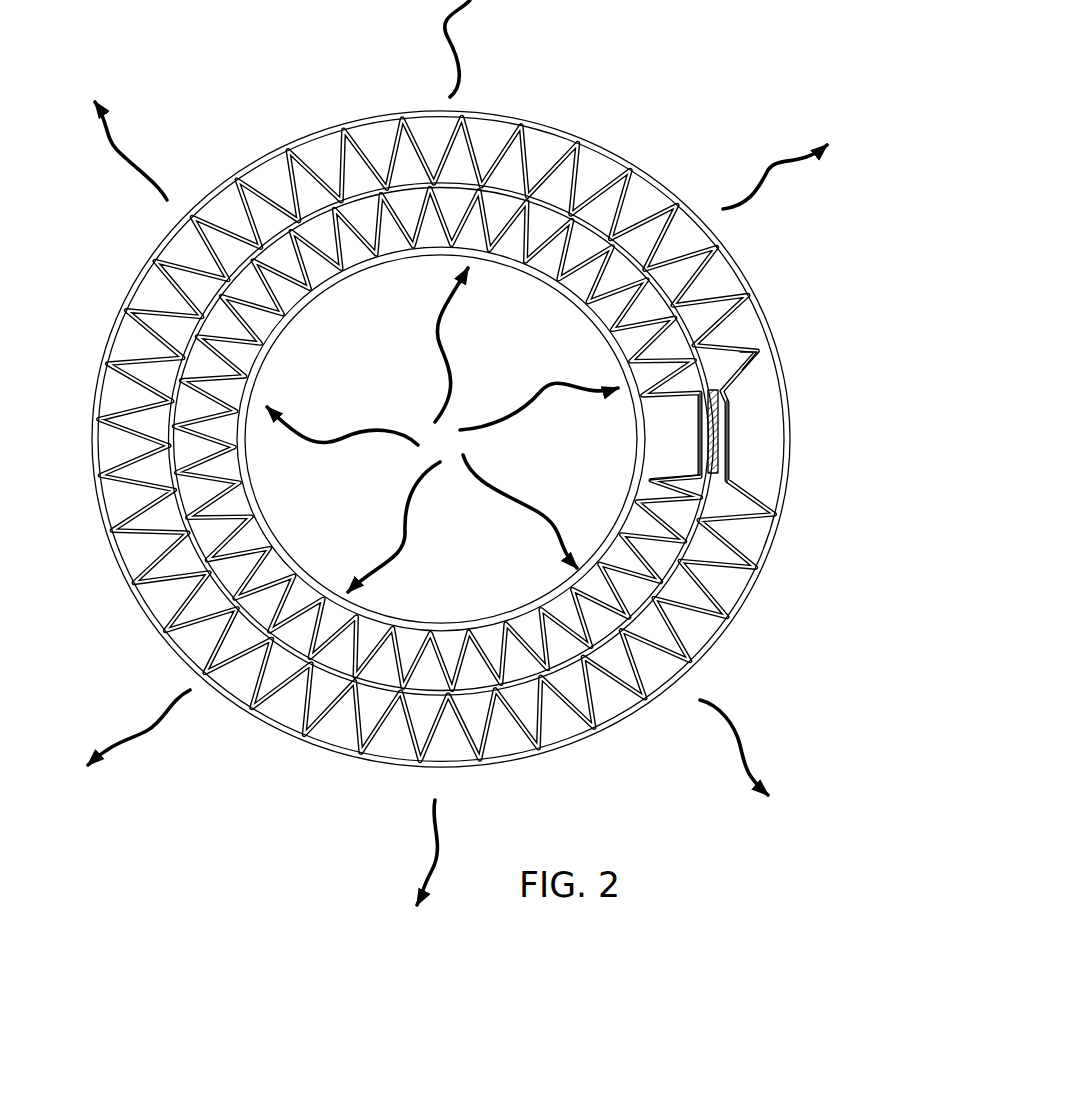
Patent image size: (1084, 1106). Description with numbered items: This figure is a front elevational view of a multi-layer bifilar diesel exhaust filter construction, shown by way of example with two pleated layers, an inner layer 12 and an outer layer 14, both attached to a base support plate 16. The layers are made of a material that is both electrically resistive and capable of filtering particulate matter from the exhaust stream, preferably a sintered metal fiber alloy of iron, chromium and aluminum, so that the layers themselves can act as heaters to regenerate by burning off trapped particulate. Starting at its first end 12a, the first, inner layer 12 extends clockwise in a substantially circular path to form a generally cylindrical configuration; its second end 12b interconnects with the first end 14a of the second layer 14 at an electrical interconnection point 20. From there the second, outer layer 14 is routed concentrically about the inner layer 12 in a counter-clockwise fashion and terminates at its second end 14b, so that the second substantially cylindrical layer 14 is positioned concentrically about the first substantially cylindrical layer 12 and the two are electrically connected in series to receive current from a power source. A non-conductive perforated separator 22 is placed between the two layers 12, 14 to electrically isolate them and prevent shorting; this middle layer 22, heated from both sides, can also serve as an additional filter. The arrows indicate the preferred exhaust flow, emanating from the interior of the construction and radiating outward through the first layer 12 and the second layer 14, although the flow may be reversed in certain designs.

The inner layer 12 is at (690, 603).
The first end of the first layer 12a is at (729, 430).
The second end of the first layer 12b is at (750, 358).
The outer layer 14 is at (648, 522).
The first end of the second layer 14a is at (722, 393).
The second end of the second layer 14b is at (726, 458).
The base support plate 16 is at (722, 274).
The electrical interconnection point 20 is at (716, 460).
The non-conductive perforated separator 22 is at (597, 180).